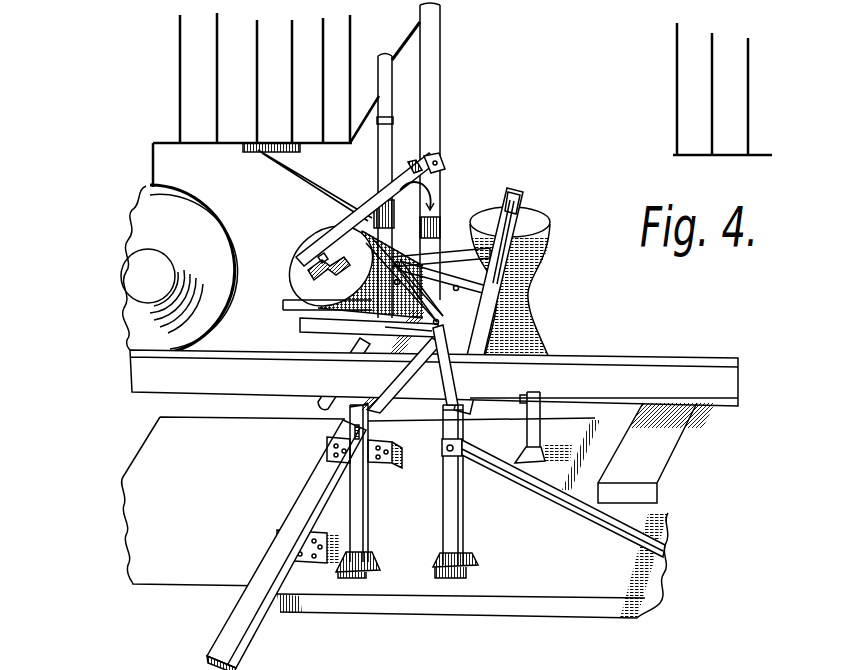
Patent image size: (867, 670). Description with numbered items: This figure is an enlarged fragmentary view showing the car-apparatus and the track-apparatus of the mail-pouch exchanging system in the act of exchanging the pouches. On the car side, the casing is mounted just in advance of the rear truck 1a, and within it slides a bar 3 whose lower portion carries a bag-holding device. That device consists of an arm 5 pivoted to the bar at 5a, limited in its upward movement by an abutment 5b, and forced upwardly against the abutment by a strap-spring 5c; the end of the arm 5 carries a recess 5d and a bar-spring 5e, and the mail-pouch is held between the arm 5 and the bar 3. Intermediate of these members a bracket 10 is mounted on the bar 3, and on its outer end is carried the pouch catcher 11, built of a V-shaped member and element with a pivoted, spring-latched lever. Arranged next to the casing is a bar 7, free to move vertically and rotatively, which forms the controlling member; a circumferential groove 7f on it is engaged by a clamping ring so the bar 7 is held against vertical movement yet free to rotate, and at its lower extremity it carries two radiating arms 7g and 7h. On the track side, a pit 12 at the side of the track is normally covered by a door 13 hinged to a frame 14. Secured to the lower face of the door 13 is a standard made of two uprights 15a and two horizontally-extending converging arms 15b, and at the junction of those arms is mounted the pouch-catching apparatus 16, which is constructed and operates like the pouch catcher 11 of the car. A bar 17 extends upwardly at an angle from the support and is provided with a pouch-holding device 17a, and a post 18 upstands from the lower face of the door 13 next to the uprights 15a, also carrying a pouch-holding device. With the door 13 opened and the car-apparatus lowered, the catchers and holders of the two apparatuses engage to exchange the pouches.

The rear truck 1a is at (178, 217).
The bar 3 is at (430, 70).
The arm 5 is at (362, 222).
The pivot 5a is at (441, 160).
The abutment 5b is at (416, 160).
The strap-spring 5c is at (442, 195).
The recess 5d is at (343, 309).
The bar-spring 5e is at (318, 265).
The bar 7 is at (383, 88).
The circumferential groove 7f is at (378, 124).
The radiating arm 7g is at (294, 306).
The radiating arm 7h is at (332, 383).
The bracket 10 is at (405, 247).
The pouch catcher 11 is at (446, 260).
The pit 12 is at (233, 501).
The door 13 is at (496, 510).
The frame 14 is at (245, 647).
The uprights 15a is at (449, 532).
The converging arms 15b is at (403, 388).
The pouch-catching apparatus 16 is at (440, 324).
The bar 17 is at (514, 190).
The pouch-holding device 17a is at (530, 209).
The post 18 is at (528, 426).